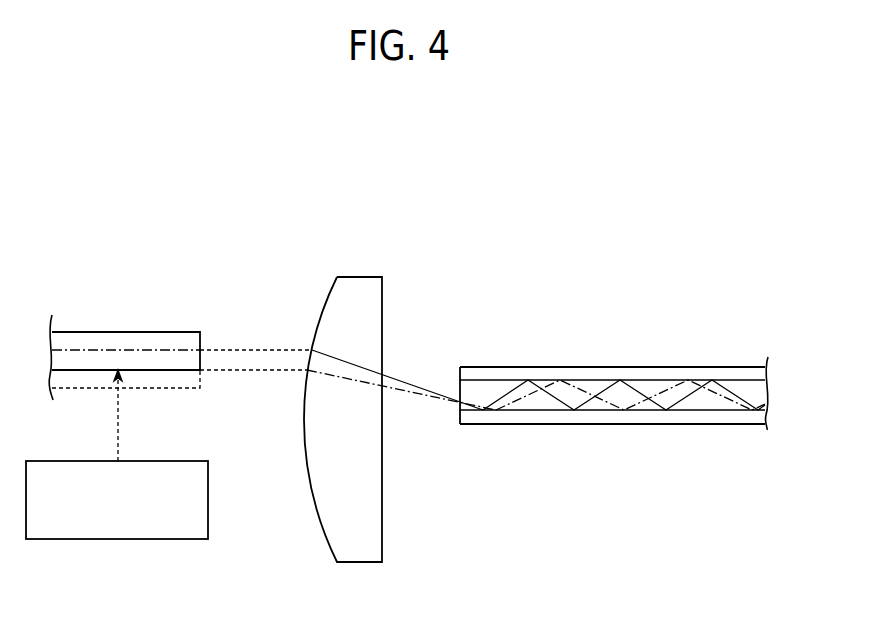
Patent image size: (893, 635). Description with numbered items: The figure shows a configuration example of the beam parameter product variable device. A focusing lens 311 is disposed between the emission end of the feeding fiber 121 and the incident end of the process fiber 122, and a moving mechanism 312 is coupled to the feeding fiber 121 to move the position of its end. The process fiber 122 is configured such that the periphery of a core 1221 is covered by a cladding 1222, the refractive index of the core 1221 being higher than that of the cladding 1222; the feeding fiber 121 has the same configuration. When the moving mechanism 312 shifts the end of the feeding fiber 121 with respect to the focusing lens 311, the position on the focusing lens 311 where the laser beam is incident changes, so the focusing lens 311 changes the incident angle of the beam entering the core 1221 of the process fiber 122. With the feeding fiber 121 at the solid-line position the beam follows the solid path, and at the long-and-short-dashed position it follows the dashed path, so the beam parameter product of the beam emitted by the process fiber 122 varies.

The feeding fiber 121 is at (162, 352).
The focusing lens 311 is at (363, 277).
The moving mechanism 312 is at (208, 498).
The process fiber 122 is at (677, 366).
The core 1221 is at (550, 394).
The cladding 1222 is at (557, 372).